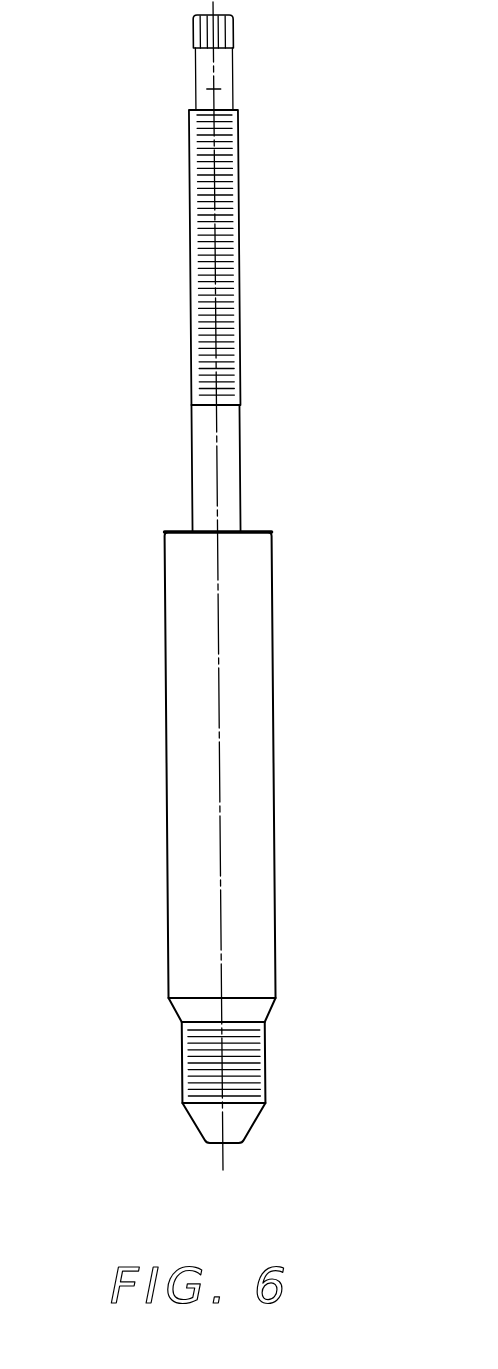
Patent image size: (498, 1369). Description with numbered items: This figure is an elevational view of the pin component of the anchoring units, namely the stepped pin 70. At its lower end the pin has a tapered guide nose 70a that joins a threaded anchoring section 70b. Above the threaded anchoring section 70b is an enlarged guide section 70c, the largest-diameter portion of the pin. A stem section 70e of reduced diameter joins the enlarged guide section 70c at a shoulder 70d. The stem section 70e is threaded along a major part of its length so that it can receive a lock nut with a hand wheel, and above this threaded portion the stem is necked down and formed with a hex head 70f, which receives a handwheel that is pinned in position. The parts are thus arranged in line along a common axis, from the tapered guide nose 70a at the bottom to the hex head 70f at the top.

The stepped pin 70 is at (177, 448).
The tapered guide nose 70a is at (243, 1117).
The threaded anchoring section 70b is at (265, 1062).
The enlarged guide section 70c is at (258, 677).
The shoulder 70d is at (248, 528).
The stem section 70e is at (240, 420).
The hex head 70f is at (233, 31).